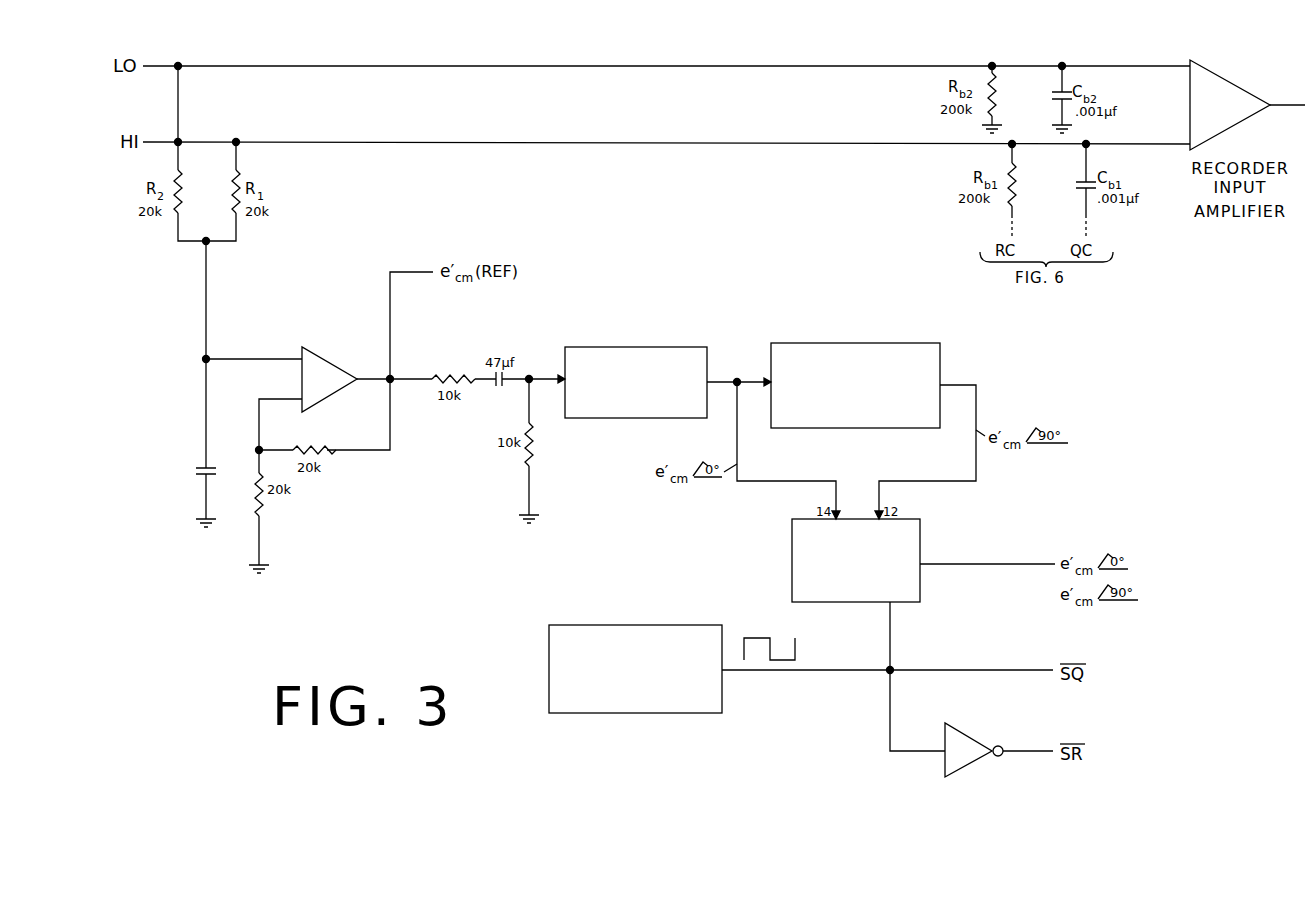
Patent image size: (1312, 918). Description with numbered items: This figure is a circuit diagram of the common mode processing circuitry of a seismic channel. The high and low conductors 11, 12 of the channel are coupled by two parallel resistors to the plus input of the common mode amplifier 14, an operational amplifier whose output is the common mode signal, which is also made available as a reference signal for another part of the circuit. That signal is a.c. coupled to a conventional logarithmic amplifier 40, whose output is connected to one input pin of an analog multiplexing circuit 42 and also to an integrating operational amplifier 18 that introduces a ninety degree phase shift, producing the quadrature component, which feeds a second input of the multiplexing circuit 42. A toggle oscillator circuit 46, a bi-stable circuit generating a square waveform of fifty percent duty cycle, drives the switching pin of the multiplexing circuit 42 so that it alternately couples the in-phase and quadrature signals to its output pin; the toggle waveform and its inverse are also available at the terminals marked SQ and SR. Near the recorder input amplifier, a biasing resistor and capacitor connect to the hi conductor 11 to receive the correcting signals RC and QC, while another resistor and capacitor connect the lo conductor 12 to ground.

The high conductor 11 is at (282, 142).
The low conductor 12 is at (267, 66).
The common mode amplifier 14 is at (320, 357).
The integrating operational amplifier 18 is at (820, 342).
The logarithmic amplifier 40 is at (598, 345).
The analog multiplexing circuit 42 is at (792, 563).
The toggle oscillator circuit 46 is at (588, 623).